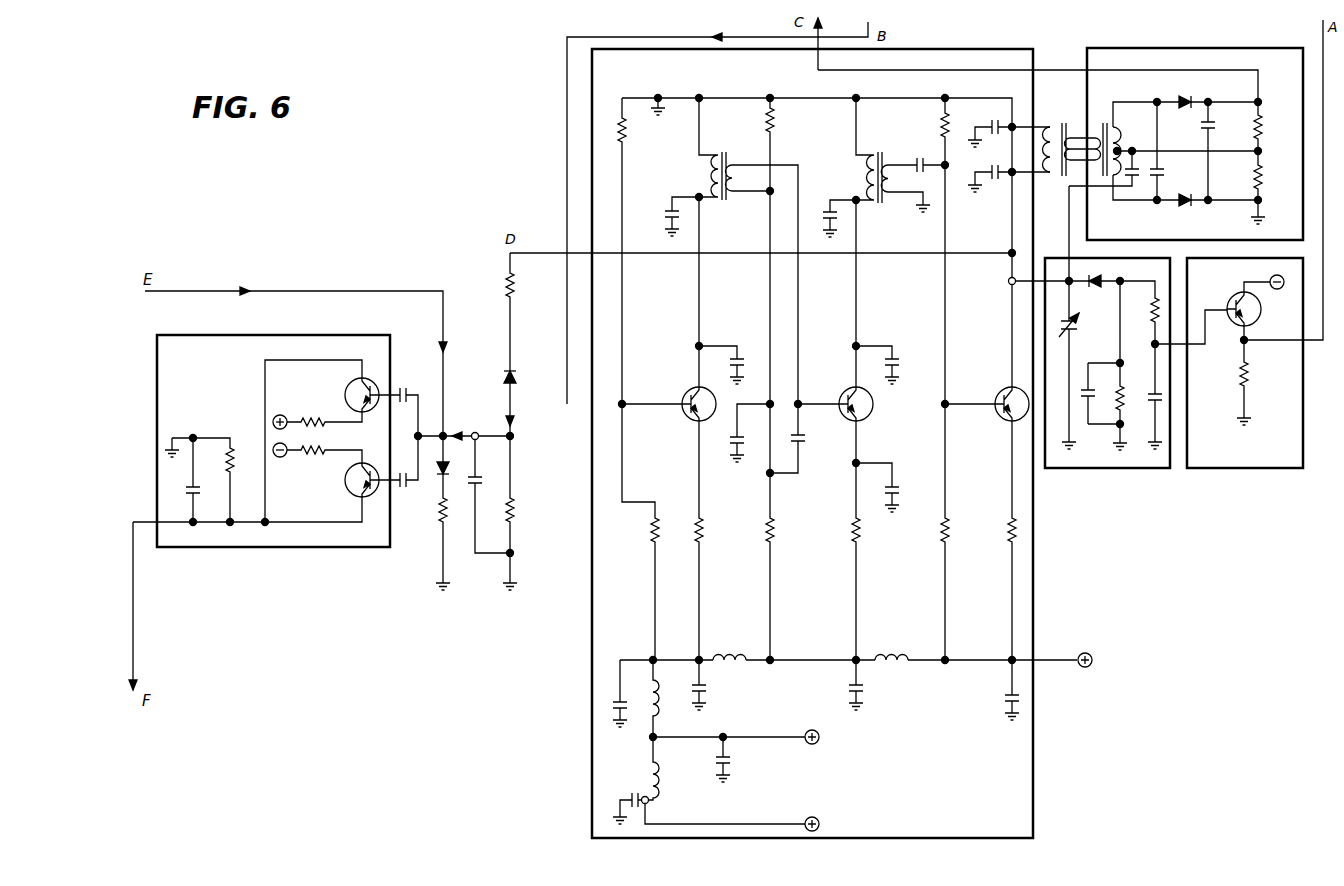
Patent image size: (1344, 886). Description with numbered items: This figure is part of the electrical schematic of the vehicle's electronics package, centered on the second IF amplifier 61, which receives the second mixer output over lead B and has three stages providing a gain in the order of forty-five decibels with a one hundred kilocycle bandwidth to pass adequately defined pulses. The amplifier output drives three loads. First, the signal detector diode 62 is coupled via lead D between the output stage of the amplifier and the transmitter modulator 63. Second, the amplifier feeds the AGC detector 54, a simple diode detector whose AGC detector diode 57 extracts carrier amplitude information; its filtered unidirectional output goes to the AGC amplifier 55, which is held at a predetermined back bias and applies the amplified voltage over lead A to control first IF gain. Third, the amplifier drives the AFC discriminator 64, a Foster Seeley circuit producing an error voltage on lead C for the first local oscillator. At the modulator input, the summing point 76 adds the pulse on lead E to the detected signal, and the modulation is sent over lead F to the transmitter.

The second IF amplifier 61 is at (592, 576).
The diode 62 is at (503, 372).
The transmitter modulator 63 is at (278, 335).
The AFC discriminator 64 is at (1196, 49).
The AGC detector 54 is at (1127, 470).
The AGC amplifier 55 is at (1217, 470).
The AGC detector diode 57 is at (1097, 287).
The summing point 76 is at (447, 433).